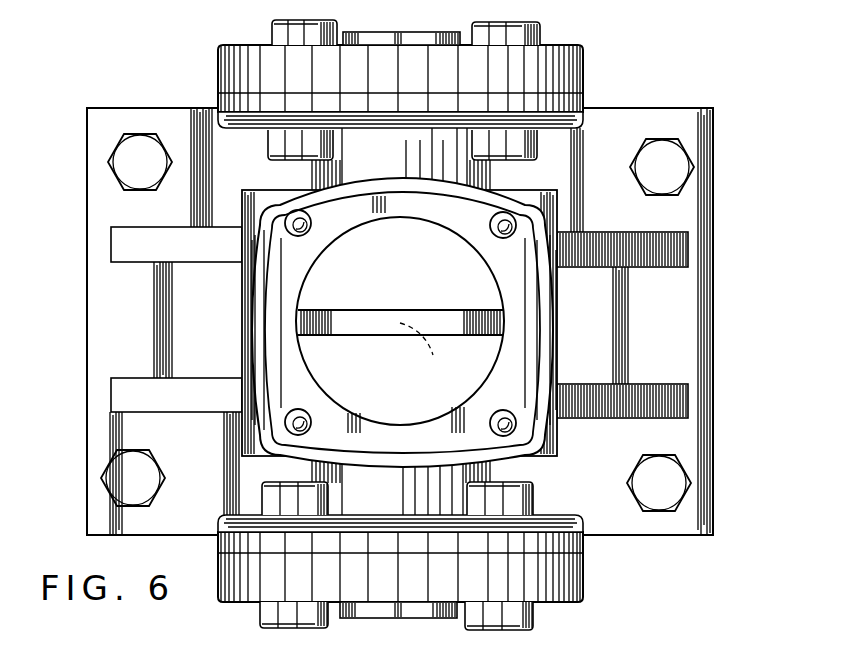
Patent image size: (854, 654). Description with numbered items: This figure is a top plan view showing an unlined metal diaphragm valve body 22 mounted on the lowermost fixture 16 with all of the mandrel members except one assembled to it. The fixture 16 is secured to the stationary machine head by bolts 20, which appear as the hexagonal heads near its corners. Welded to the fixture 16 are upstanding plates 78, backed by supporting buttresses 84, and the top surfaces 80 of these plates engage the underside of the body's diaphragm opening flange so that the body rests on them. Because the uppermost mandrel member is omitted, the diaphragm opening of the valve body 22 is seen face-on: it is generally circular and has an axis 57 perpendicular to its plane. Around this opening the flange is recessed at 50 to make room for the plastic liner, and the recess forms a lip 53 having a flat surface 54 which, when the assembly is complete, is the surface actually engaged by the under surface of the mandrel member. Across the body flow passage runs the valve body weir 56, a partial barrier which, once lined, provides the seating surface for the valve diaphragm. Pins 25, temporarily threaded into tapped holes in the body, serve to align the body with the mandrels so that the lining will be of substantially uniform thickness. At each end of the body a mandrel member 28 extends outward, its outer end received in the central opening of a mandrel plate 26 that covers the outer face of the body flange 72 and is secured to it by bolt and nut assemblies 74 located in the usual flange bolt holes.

The fixture 16 is at (715, 343).
The bolts 20 is at (145, 132).
The metal diaphragm valve body 22 is at (303, 182).
The pins 25 is at (297, 417).
The mandrel plate 26 is at (585, 68).
The mandrel member 28 is at (455, 32).
The recess 50 is at (455, 222).
The lip 53 is at (548, 352).
The surface 54 is at (540, 300).
The valve body weir 56 is at (388, 318).
The axis 57 is at (431, 345).
The body flange 72 is at (582, 108).
The bolt and nut assemblies 74 is at (272, 32).
The upstanding plates 78 is at (238, 347).
The top surfaces 80 is at (243, 267).
The supporting buttresses 84 is at (170, 412).